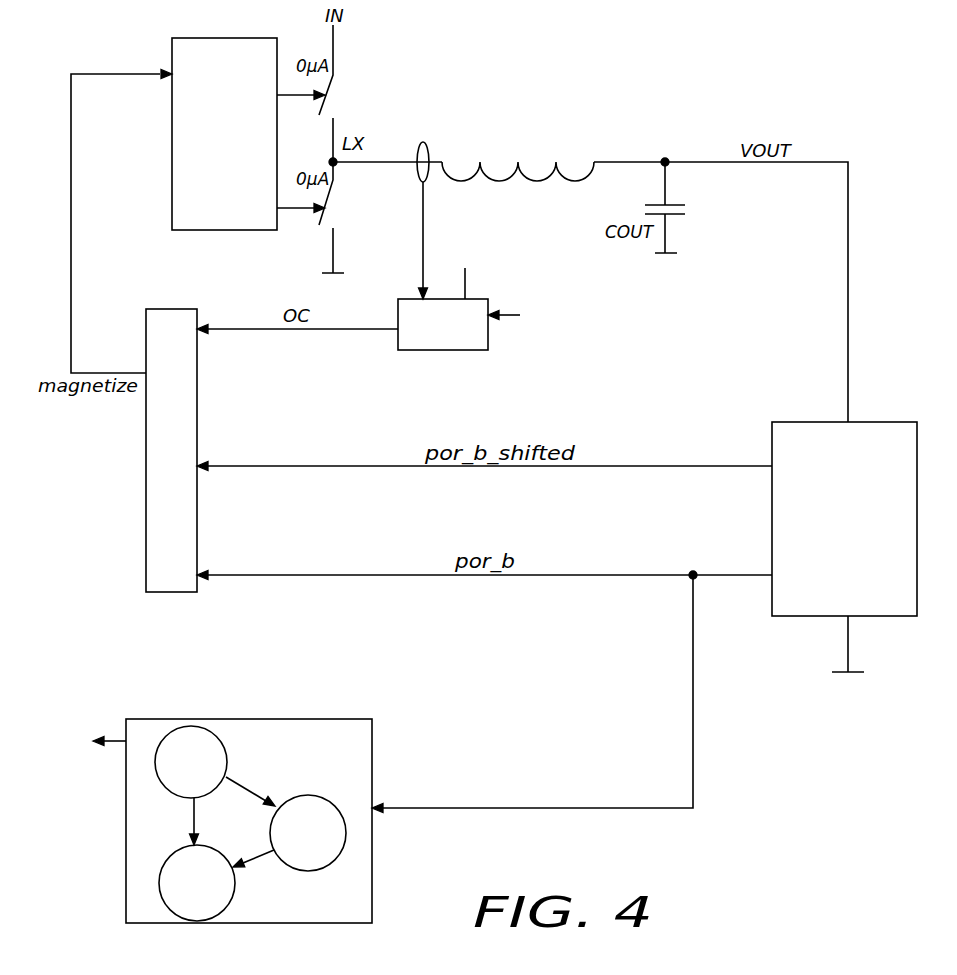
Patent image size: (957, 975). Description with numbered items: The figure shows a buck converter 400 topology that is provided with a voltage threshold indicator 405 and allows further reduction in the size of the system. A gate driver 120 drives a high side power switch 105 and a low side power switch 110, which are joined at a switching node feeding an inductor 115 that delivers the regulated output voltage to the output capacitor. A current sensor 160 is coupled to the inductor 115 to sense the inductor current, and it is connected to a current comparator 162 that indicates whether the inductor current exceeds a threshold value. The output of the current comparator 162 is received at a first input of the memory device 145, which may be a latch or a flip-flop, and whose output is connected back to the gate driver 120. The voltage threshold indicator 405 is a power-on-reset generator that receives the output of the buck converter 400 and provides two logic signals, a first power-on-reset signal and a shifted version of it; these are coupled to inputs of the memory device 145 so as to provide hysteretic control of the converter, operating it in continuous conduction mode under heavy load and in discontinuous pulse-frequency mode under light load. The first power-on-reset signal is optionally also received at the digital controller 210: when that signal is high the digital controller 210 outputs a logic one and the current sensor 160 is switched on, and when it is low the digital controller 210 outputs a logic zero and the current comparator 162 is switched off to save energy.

The gate driver 120 is at (236, 38).
The high side power switch 105 is at (352, 82).
The low side power switch 110 is at (340, 228).
The current sensor 160 is at (427, 146).
The inductor 115 is at (535, 154).
The current comparator 162 is at (488, 342).
The memory device 145 is at (184, 309).
The voltage threshold indicator 405 is at (805, 617).
The digital controller 210 is at (126, 790).
The buck converter 400 is at (670, 843).